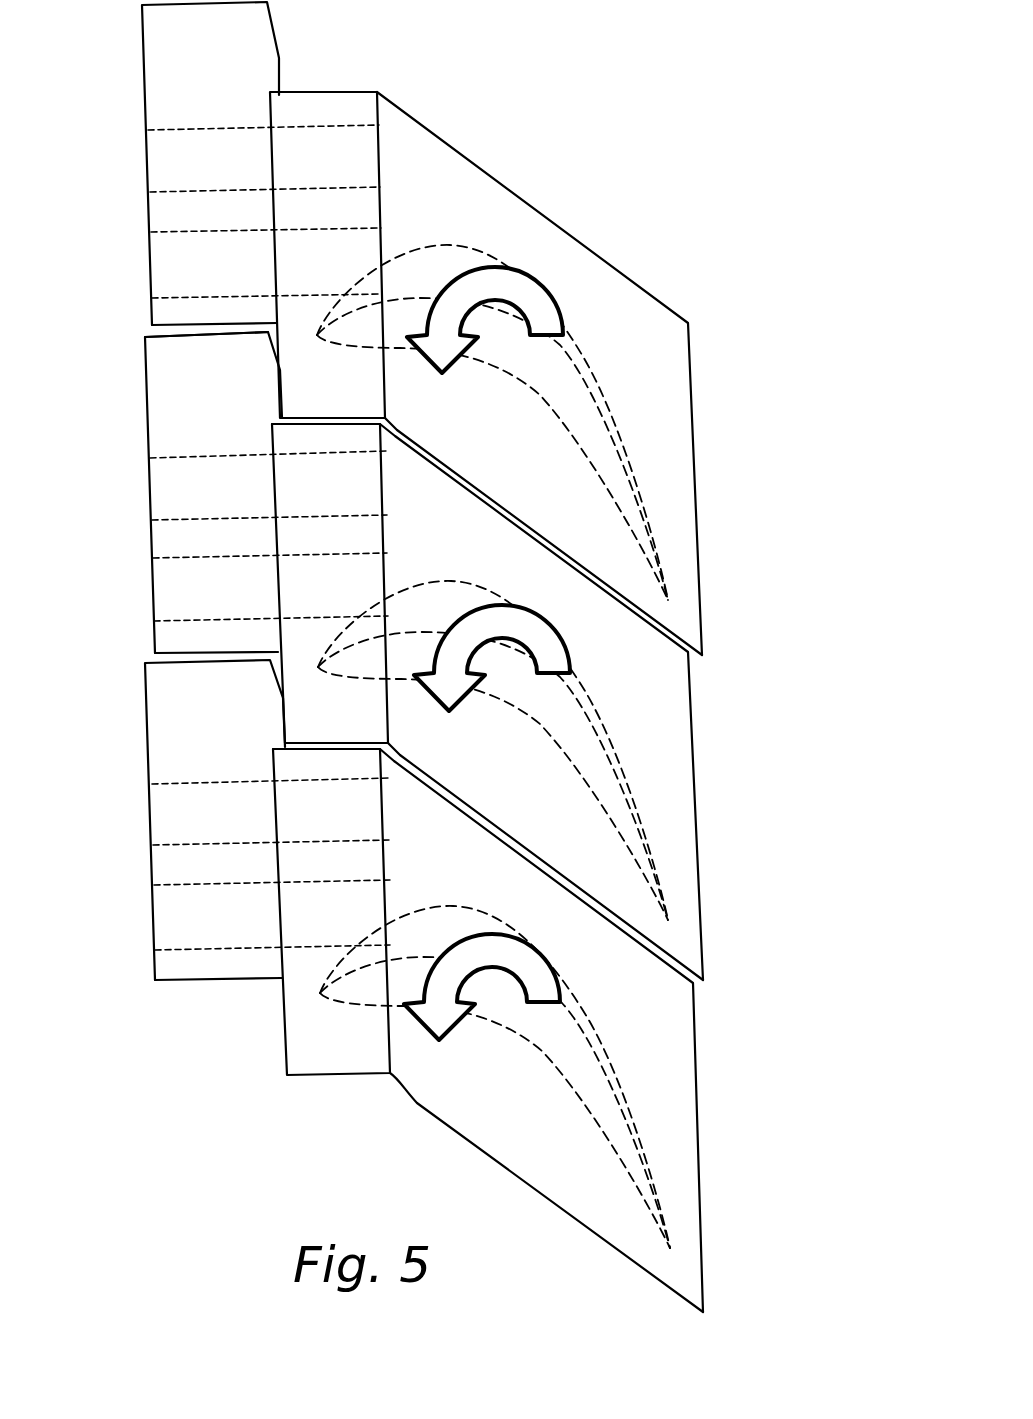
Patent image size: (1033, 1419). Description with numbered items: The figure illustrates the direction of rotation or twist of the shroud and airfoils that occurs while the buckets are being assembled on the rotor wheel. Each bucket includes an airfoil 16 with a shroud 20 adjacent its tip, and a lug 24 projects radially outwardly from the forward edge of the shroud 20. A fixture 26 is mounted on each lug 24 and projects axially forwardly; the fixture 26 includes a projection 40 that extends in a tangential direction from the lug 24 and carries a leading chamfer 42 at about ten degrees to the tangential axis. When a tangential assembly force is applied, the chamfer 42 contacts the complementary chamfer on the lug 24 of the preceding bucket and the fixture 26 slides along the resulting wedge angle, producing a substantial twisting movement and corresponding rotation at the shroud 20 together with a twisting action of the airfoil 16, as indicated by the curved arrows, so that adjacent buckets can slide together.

The airfoil 16 is at (610, 1070).
The shroud 20 is at (650, 750).
The lug 24 is at (315, 1033).
The fixture 26 is at (150, 493).
The projection 40 is at (173, 385).
The leading chamfer 42 is at (277, 343).